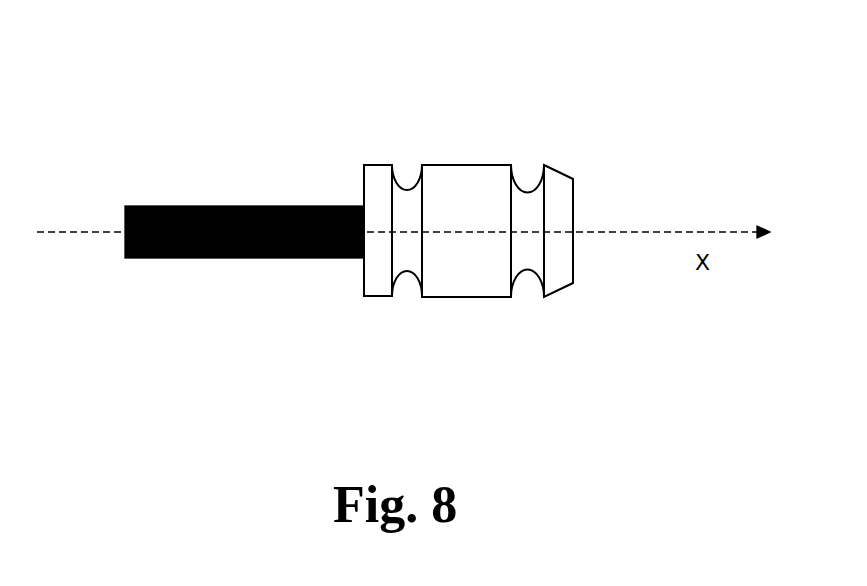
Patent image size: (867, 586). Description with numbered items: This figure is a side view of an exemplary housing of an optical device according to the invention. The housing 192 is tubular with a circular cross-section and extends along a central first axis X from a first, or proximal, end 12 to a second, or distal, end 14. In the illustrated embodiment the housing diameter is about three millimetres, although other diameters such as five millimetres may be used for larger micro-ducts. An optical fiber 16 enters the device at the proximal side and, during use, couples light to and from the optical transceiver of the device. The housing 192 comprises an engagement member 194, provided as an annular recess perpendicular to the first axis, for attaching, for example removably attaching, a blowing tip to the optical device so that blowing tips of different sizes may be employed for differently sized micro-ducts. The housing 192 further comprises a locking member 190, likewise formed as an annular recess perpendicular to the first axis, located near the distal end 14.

The optical fiber 16 is at (180, 206).
The first end 12 is at (363, 273).
The engagement member 194 is at (407, 188).
The housing 192 is at (473, 164).
The locking member 190 is at (532, 190).
The second end 14 is at (573, 212).